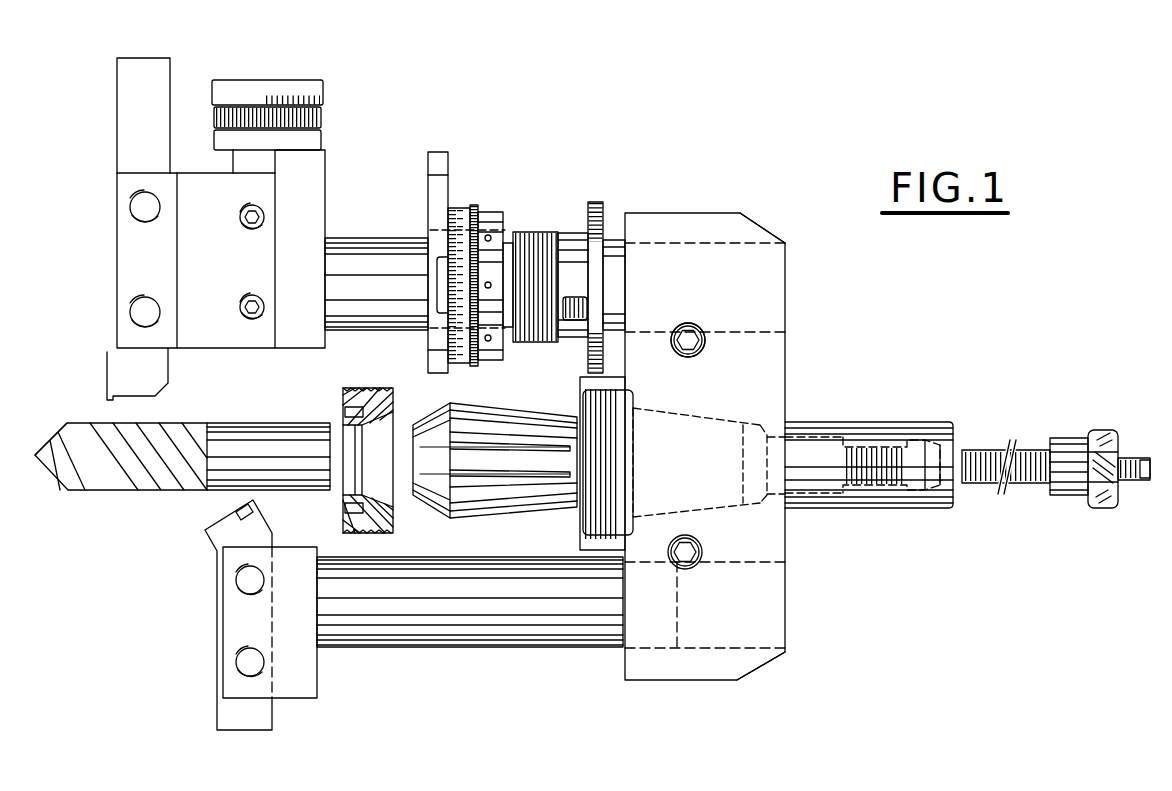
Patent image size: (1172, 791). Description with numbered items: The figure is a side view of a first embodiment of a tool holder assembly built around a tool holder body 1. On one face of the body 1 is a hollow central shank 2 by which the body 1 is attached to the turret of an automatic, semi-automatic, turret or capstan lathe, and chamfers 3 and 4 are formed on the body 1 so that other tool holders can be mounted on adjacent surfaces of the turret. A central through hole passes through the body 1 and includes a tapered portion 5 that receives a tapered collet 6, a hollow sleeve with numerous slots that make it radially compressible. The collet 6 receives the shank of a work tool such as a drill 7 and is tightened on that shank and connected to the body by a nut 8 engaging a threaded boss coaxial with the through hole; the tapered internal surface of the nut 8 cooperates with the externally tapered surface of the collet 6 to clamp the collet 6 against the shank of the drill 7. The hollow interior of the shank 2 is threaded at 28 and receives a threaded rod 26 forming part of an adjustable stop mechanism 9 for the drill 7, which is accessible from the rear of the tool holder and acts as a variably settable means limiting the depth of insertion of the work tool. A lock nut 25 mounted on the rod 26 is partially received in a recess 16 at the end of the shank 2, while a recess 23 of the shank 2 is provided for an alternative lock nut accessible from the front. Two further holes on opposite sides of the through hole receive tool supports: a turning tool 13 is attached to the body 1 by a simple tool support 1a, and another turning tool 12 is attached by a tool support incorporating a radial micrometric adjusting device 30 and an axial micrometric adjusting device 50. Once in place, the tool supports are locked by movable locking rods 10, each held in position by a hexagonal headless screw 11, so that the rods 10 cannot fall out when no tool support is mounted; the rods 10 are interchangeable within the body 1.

The tool holder body 1 is at (765, 373).
The tool support 1a is at (297, 665).
The hollow central shank 2 is at (900, 437).
The chamfer 3 is at (763, 229).
The chamfer 4 is at (765, 663).
The tapered portion 5 is at (706, 420).
The tapered collet 6 is at (535, 435).
The drill 7 is at (291, 426).
The nut 8 is at (400, 386).
The adjustable stop mechanism 9 is at (1062, 437).
The locking rod 10 is at (682, 357).
The hexagonal headless screw 11 is at (677, 351).
The turning tool 12 is at (167, 385).
The turning tool 13 is at (248, 722).
The recess 16 is at (933, 437).
The recess 23 is at (808, 475).
The lock nut 25 is at (1073, 486).
The threaded rod 26 is at (1013, 485).
The thread 28 is at (880, 475).
The radial micrometric adjusting device 30 is at (330, 220).
The axial micrometric adjusting device 50 is at (503, 210).